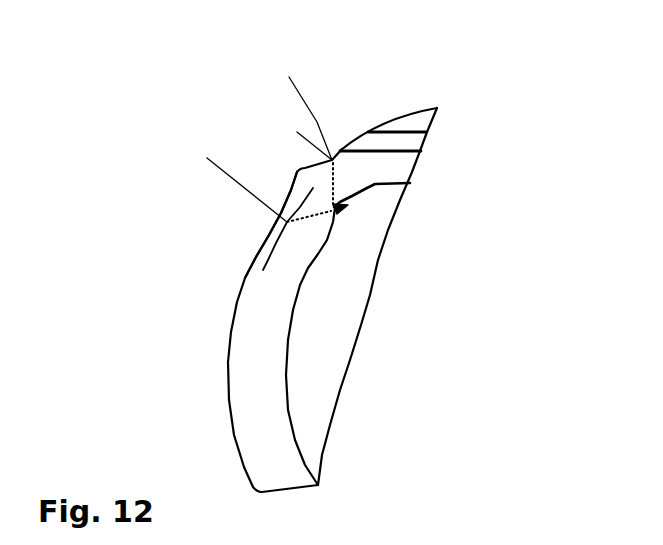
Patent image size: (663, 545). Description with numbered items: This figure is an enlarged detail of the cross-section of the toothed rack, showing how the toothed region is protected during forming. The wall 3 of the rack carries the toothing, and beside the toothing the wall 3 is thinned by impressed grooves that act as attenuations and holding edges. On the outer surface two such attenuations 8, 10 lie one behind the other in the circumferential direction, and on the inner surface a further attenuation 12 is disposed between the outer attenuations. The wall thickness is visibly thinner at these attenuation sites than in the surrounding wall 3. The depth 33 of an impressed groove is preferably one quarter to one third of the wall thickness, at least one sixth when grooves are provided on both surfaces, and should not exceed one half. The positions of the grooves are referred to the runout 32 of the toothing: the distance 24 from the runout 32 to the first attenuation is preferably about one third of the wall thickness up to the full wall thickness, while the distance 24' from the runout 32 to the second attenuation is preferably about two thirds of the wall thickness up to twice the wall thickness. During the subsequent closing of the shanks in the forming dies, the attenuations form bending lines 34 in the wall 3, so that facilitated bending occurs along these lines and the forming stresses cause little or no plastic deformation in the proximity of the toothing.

The wall 3 is at (264, 400).
The attenuation 8 is at (333, 157).
The attenuation 10 is at (287, 222).
The attenuation 12 is at (348, 210).
The distance 24 is at (305, 118).
The distance 24' is at (247, 153).
The runout 32 is at (341, 151).
The depth 33 is at (289, 267).
The bending lines 34 is at (337, 195).